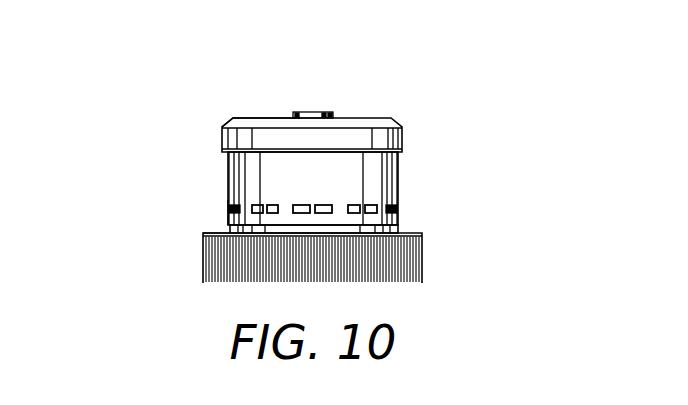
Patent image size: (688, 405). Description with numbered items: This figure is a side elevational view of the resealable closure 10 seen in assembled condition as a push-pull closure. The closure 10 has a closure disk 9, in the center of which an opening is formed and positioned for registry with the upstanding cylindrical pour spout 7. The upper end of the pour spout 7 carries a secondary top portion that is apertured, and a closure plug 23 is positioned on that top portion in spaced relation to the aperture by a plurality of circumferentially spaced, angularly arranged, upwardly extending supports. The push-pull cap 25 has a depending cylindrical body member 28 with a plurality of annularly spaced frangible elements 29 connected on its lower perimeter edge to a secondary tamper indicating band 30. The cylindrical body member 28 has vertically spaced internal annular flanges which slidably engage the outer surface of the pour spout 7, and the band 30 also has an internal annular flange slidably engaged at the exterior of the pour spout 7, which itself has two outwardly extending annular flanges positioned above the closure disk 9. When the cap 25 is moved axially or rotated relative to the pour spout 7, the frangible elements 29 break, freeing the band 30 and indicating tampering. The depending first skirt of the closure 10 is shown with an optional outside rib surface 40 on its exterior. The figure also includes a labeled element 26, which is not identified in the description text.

The resealable closure 10 is at (203, 256).
The outside rib surface 40 is at (421, 257).
The push-pull cap 25 is at (400, 116).
The cover edge 26 is at (261, 117).
The closure plug 23 is at (315, 112).
The depending cylindrical body member 28 is at (399, 163).
The frangible elements 29 is at (287, 205).
The secondary tamper indicating band 30 is at (399, 226).
The upstanding cylindrical pour spout 7 is at (228, 230).
The closure disk 9 is at (205, 233).